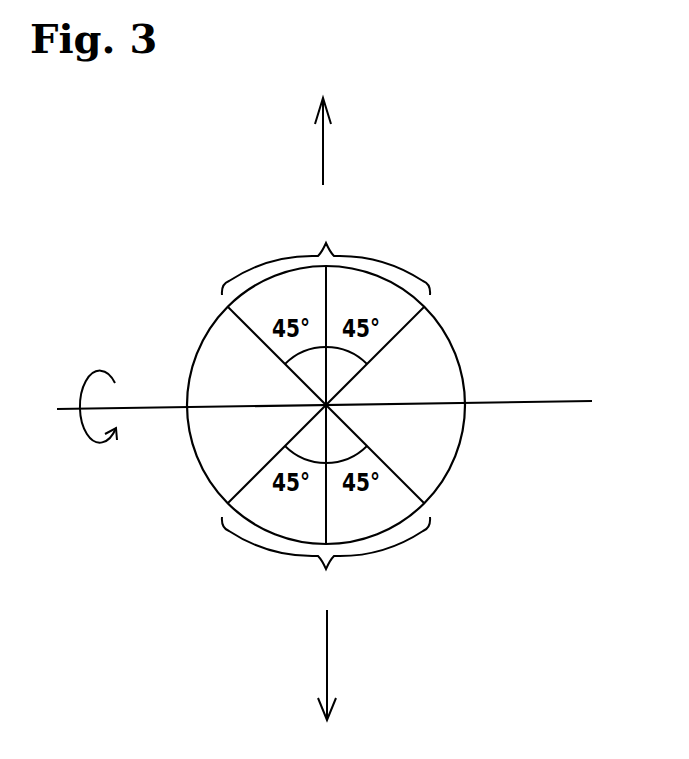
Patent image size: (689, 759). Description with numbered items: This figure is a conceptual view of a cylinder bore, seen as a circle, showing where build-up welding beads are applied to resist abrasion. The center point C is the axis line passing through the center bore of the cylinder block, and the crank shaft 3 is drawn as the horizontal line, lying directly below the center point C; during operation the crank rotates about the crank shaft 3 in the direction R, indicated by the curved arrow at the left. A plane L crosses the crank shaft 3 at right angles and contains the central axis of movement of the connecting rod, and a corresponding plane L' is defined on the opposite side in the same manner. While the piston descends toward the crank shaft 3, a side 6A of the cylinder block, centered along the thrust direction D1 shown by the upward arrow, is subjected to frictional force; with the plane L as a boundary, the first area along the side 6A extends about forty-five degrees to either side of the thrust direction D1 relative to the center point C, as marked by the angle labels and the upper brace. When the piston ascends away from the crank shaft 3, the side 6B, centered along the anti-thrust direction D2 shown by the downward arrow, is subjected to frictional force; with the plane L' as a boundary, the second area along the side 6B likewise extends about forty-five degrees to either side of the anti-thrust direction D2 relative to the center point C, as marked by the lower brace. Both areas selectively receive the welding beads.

The crank shaft 3 is at (532, 399).
The plane L is at (419, 335).
The plane L' is at (410, 474).
The center point C is at (327, 406).
The side 6A is at (326, 253).
The side 6B is at (326, 560).
The thrust direction D1 is at (325, 142).
The anti-thrust direction D2 is at (327, 665).
The direction R is at (83, 437).